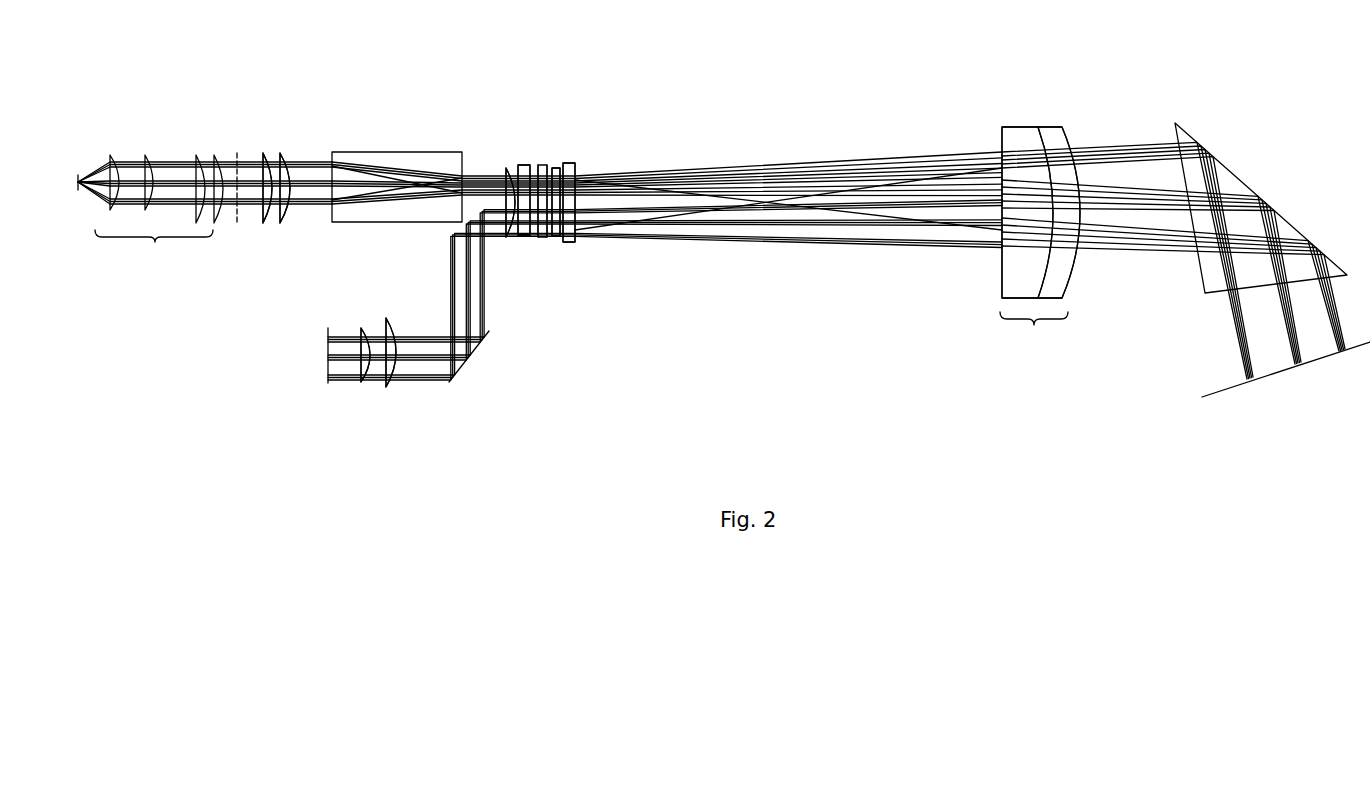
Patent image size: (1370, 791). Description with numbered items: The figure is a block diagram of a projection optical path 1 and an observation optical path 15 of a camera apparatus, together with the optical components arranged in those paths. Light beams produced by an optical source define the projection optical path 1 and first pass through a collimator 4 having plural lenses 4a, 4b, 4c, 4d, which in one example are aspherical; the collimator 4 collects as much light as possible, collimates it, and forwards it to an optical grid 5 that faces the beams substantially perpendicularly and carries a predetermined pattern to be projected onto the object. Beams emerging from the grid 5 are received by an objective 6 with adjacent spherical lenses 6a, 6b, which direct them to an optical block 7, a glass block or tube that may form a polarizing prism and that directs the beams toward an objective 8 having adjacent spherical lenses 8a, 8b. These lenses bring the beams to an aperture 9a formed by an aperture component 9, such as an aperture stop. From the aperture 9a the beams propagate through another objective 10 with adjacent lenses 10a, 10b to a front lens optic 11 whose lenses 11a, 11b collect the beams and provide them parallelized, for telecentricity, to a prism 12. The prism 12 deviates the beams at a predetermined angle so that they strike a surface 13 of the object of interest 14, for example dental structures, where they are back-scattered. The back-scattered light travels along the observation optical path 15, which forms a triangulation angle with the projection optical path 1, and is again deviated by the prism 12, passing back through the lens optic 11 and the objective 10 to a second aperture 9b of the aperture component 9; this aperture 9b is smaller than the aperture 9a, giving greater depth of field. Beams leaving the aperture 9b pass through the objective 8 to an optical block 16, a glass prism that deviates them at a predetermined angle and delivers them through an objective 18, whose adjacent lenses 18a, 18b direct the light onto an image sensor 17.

The projection optical path 1 is at (80, 173).
The collimator 4 is at (155, 248).
The lens 4a is at (110, 158).
The lens 4b is at (145, 158).
The lens 4c is at (197, 156).
The lens 4d is at (215, 156).
The optical grid 5 is at (237, 226).
The objective 6 is at (268, 153).
The spherical lens 6a is at (264, 226).
The spherical lens 6b is at (284, 226).
The optical block 7 is at (372, 163).
The objective 8 is at (512, 170).
The spherical lens 8a is at (508, 170).
The spherical lens 8b is at (522, 238).
The aperture component 9 is at (540, 166).
The aperture 9a is at (549, 166).
The aperture 9b is at (545, 240).
The objective 10 is at (568, 244).
The lens 10a is at (557, 168).
The lens 10b is at (571, 163).
The front lens optic 11 is at (1040, 242).
The lens 11a is at (1015, 127).
The lens 11b is at (1050, 127).
The prism 12 is at (1292, 236).
The surface 13 is at (1222, 398).
The object of interest 14 is at (1334, 411).
The observation optical path 15 is at (868, 247).
The optical block 16 is at (478, 366).
The image sensor 17 is at (328, 386).
The objective 18 is at (370, 328).
The lens 18a is at (362, 384).
The lens 18b is at (388, 389).